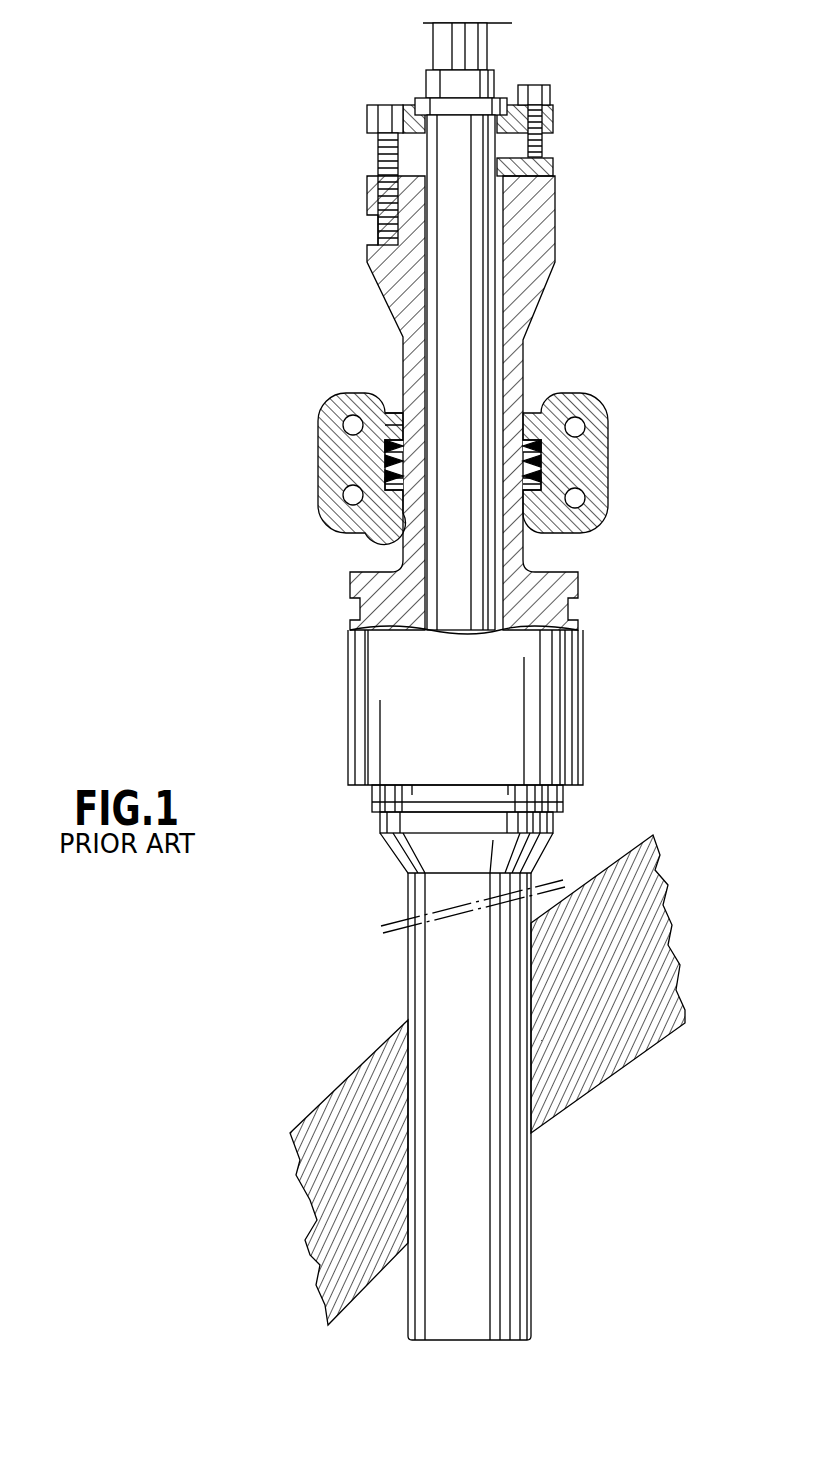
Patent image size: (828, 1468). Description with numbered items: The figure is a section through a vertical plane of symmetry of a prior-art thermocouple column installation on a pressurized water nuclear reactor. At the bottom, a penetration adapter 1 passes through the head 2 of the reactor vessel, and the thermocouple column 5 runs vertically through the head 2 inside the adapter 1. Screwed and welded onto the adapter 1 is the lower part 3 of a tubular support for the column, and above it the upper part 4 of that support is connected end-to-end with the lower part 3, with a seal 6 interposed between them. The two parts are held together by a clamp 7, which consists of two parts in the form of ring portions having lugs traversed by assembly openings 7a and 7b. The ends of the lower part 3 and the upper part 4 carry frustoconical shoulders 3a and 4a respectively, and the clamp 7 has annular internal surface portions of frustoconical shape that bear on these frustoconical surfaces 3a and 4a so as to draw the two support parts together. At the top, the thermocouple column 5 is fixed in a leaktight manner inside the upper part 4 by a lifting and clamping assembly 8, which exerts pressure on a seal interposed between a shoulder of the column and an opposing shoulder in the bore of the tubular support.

The penetration adapter 1 is at (405, 853).
The head of the vessel 2 is at (345, 1100).
The lower part of the tubular support 3 is at (380, 700).
The frustoconical shoulder of the lower part 3a is at (604, 470).
The upper part of the tubular support 4 is at (541, 227).
The frustoconical shoulder of the upper part 4a is at (540, 412).
The thermocouple column 5 is at (477, 353).
The seal 6 is at (400, 395).
The clamp 7 is at (612, 410).
The assembly opening 7a is at (578, 428).
The assembly opening 7b is at (319, 420).
The lifting and clamping assembly 8 is at (520, 75).